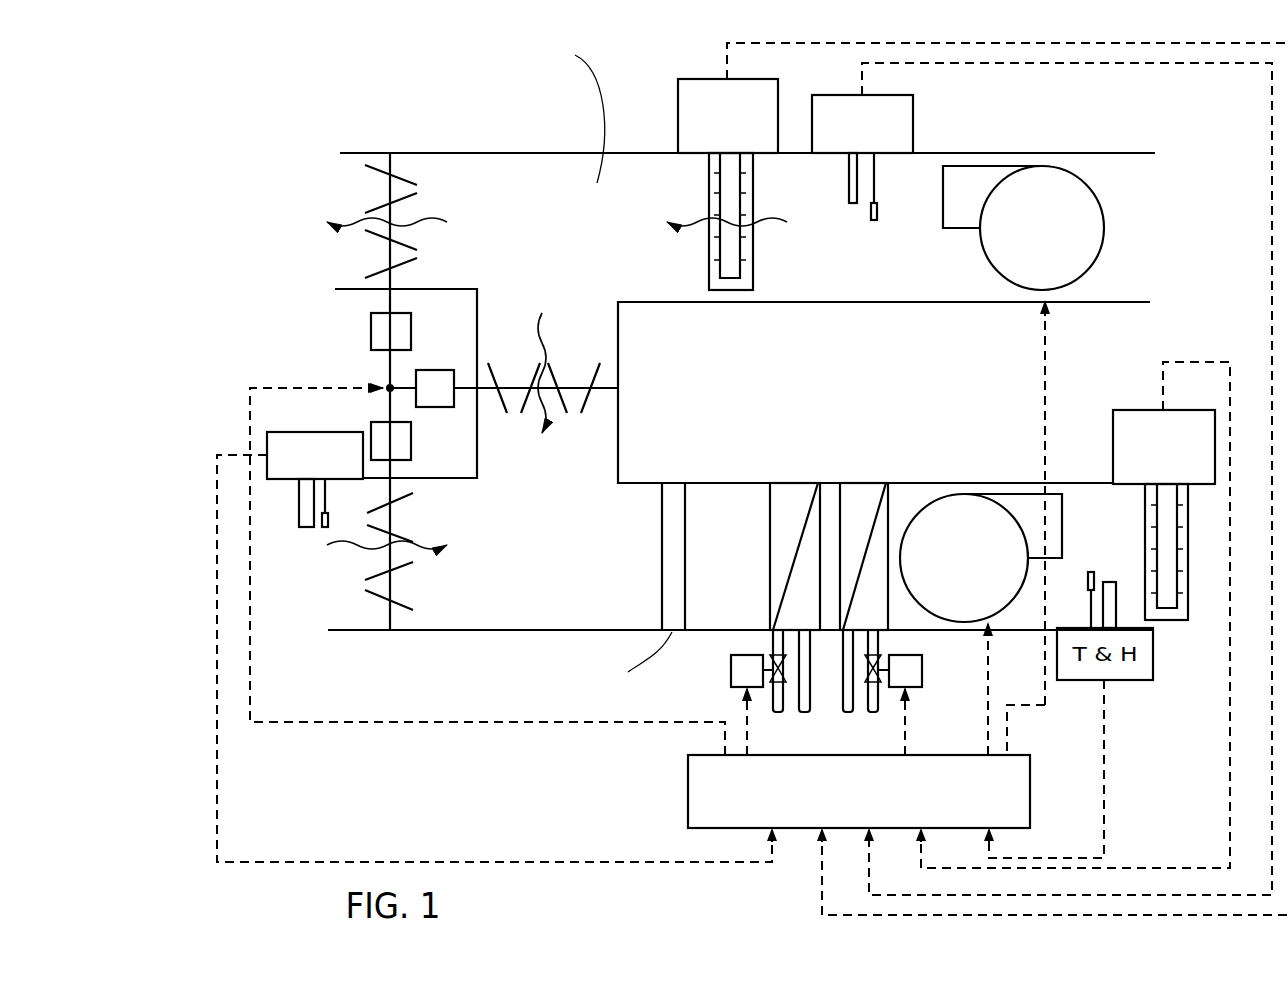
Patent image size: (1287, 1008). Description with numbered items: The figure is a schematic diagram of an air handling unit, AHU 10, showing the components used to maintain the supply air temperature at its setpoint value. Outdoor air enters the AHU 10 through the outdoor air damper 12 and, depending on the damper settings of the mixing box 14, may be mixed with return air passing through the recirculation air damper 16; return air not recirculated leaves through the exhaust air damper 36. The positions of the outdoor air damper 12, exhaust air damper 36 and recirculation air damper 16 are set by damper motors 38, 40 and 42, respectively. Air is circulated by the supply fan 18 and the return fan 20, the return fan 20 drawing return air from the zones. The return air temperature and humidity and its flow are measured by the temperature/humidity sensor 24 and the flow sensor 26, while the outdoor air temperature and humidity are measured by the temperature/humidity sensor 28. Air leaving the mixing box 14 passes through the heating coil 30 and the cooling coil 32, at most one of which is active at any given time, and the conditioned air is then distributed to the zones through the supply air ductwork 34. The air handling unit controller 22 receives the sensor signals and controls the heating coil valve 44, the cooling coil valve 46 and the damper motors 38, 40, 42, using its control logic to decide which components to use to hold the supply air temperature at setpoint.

The air handling unit 10 is at (247, 232).
The outdoor air damper 12 is at (355, 590).
The mixing box 14 is at (543, 615).
The recirculation air damper 16 is at (574, 353).
The supply fan 18 is at (1015, 592).
The return fan 20 is at (1100, 203).
The air handling unit controller 22 is at (688, 790).
The temperature/humidity sensor 24 is at (888, 95).
The flow sensor 26 is at (700, 80).
The temperature/humidity sensor 28 is at (267, 443).
The heating coil 30 is at (800, 483).
The cooling coil 32 is at (863, 483).
The supply air ductwork 34 is at (1138, 408).
The exhaust air damper 36 is at (378, 187).
The damper motor 38 is at (382, 427).
The damper motor 40 is at (380, 329).
The damper motor 42 is at (437, 378).
The heating coil valve 44 is at (730, 663).
The cooling coil valve 46 is at (921, 677).